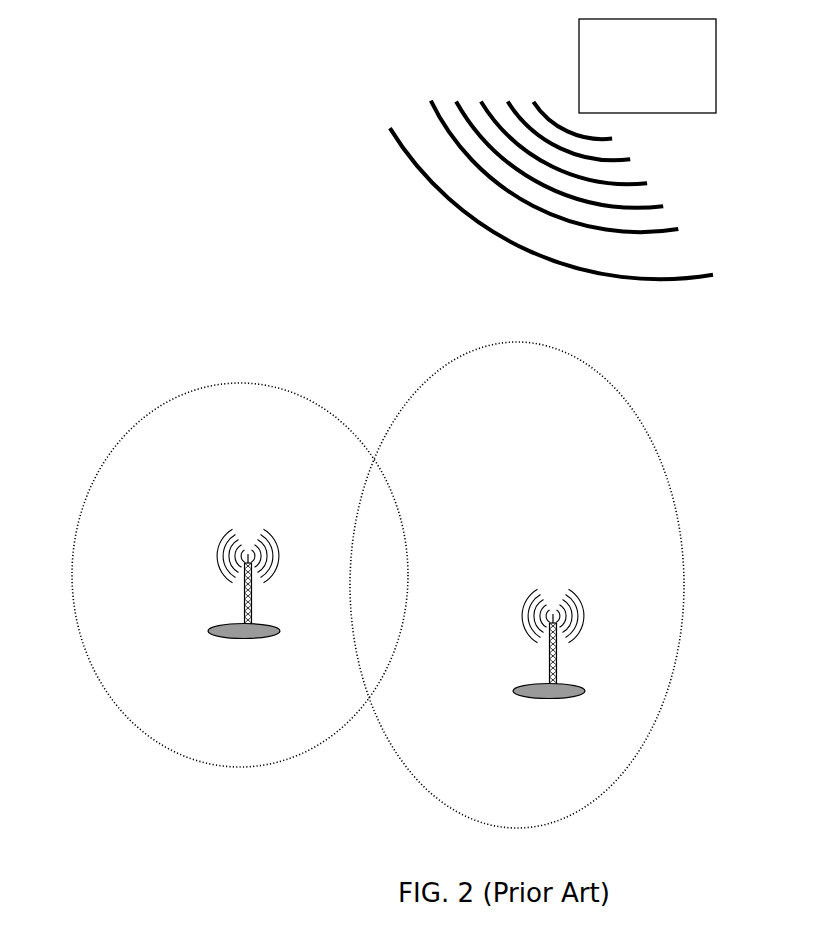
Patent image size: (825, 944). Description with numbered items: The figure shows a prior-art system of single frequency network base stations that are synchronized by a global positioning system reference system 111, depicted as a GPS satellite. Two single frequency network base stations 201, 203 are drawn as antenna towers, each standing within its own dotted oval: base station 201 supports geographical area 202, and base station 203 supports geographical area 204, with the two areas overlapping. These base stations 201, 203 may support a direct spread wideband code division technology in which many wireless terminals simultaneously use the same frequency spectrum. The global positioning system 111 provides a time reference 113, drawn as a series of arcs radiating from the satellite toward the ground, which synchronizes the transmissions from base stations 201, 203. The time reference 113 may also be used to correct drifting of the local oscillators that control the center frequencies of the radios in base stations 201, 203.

The global positioning system reference system 111 is at (716, 93).
The time reference 113 is at (708, 273).
The single frequency network base station 201 is at (549, 640).
The geographical area 202 is at (677, 548).
The single frequency network base station 203 is at (244, 576).
The geographical area 204 is at (121, 444).